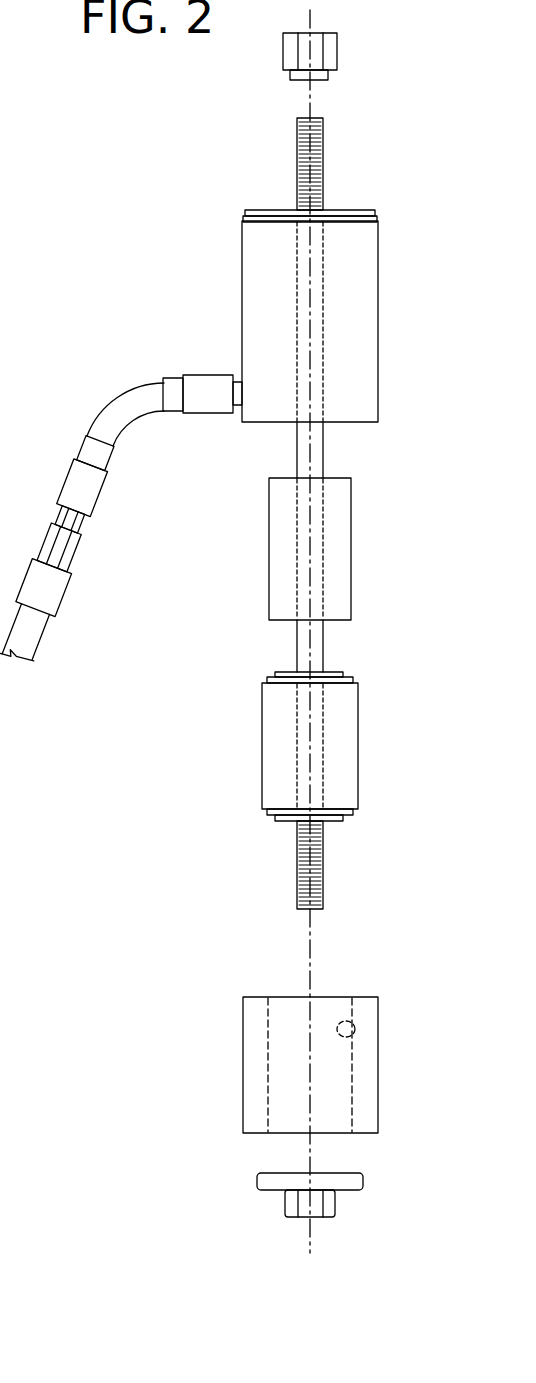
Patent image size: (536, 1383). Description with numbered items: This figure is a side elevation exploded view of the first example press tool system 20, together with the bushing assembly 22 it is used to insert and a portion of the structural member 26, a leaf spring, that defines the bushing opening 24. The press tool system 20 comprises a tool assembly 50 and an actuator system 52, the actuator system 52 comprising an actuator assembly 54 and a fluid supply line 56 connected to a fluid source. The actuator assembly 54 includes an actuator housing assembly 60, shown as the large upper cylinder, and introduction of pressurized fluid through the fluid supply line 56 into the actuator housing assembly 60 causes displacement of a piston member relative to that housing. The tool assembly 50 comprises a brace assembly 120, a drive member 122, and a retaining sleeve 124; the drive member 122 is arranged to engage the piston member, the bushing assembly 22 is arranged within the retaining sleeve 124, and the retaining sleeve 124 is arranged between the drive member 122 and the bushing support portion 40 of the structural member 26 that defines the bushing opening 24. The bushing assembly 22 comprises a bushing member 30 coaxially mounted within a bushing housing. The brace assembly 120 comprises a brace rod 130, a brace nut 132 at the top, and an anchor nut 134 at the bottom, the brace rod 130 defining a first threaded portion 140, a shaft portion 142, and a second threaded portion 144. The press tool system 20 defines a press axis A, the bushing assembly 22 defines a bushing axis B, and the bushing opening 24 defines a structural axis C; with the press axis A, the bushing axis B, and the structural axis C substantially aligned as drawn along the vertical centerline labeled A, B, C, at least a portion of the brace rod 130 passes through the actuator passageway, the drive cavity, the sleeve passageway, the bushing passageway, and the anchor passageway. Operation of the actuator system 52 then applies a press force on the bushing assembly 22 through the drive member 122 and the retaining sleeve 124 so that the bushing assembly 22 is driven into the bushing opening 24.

The axes A, B, C is at (313, 24).
The press tool system 20 is at (167, 186).
The bushing assembly 22 is at (349, 671).
The bushing opening 24 is at (355, 1026).
The structural member 26 is at (242, 1045).
The bushing member 30 is at (337, 672).
The bushing support portion 40 is at (368, 1073).
The tool assembly 50 is at (285, 916).
The actuator system 52 is at (218, 250).
The actuator assembly 54 is at (238, 296).
The fluid supply line 56 is at (130, 398).
The actuator housing assembly 60 is at (362, 304).
The brace assembly 120 is at (297, 170).
The drive member 122 is at (265, 523).
The retaining sleeve 124 is at (340, 748).
The brace rod 130 is at (297, 655).
The brace nut 132 is at (328, 52).
The anchor nut 134 is at (330, 1203).
The first threaded portion 140 is at (318, 166).
The shaft portion 142 is at (317, 449).
The second threaded portion 144 is at (313, 878).